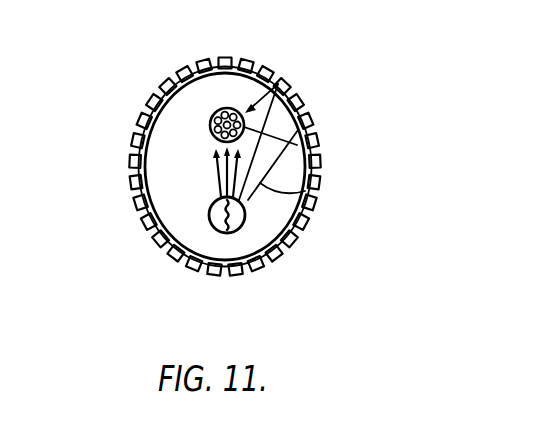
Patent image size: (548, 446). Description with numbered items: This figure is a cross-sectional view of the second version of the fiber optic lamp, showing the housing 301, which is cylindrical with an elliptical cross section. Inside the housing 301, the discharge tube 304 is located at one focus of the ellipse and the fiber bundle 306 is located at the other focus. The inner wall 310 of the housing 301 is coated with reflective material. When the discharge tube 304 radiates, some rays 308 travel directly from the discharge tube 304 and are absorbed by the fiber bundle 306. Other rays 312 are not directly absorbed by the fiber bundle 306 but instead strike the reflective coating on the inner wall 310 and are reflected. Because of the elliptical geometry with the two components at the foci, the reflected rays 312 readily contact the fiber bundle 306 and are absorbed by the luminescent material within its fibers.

The housing 301 is at (336, 103).
The discharge tube 304 is at (215, 236).
The fiber bundle 306 is at (238, 100).
The rays 308 is at (218, 177).
The inner wall 310 is at (238, 272).
The reflected rays 312 is at (305, 187).